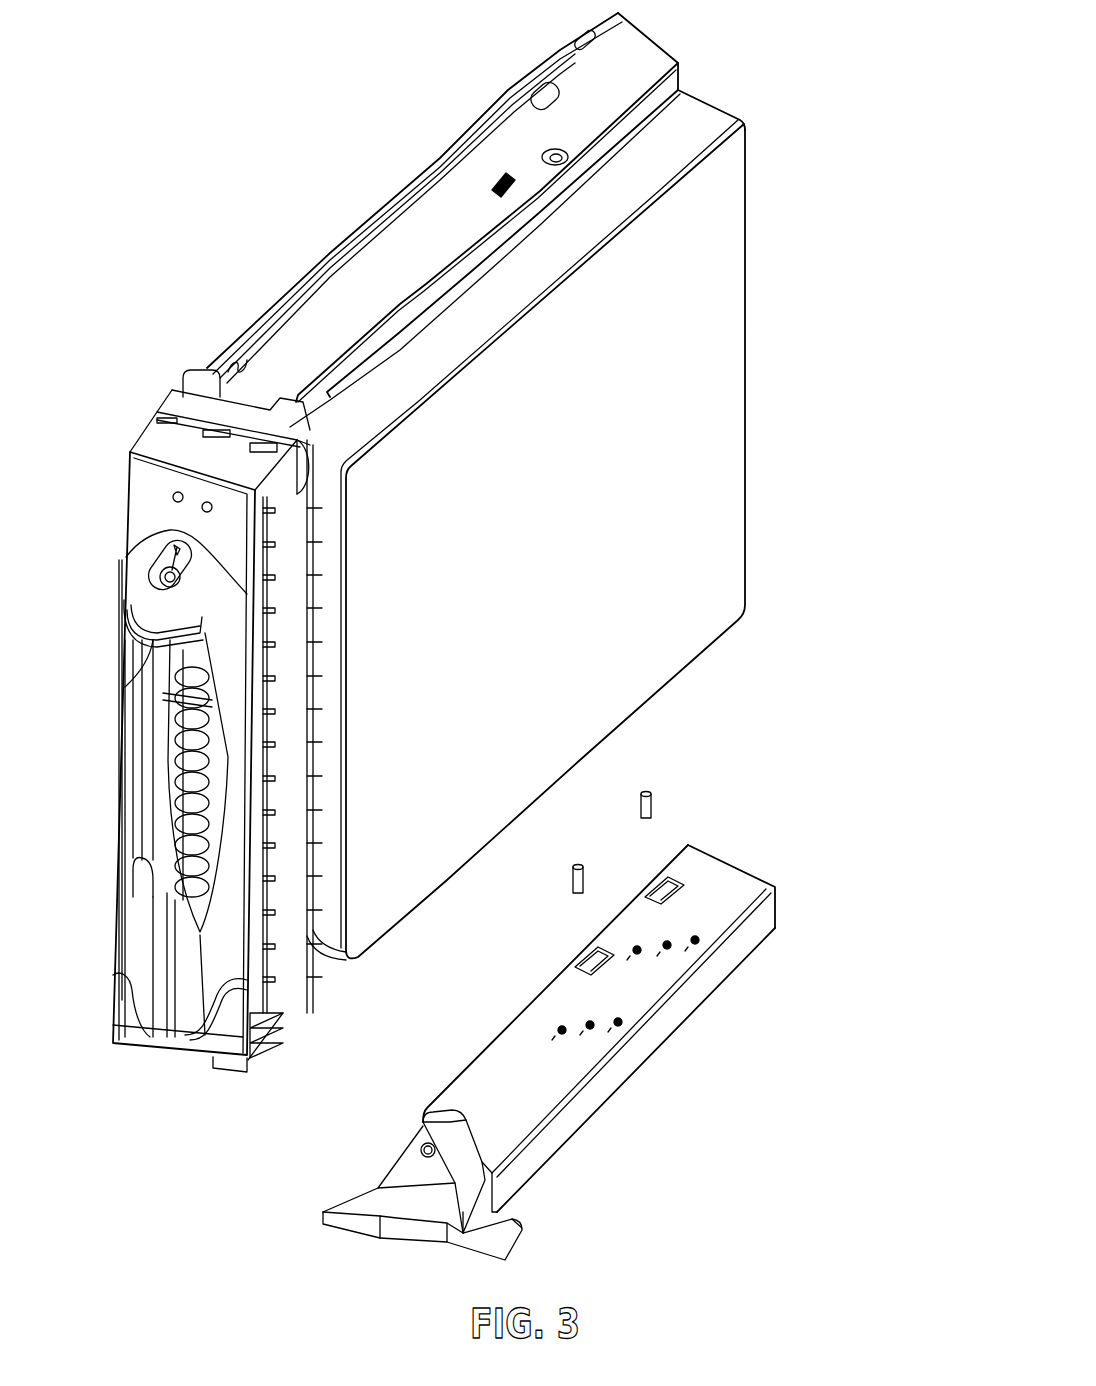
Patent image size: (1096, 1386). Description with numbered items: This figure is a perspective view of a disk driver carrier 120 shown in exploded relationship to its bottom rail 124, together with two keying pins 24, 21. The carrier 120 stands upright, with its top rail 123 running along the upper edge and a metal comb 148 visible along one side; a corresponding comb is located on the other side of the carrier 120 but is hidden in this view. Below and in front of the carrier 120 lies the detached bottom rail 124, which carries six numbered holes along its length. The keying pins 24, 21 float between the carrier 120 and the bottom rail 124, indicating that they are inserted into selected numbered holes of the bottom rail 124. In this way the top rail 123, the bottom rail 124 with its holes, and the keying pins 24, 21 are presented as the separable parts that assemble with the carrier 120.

The disk driver carrier 120 is at (582, 550).
The top rail 123 is at (473, 181).
The bottom rail 124 is at (510, 1122).
The metal comb 148 is at (300, 992).
The keying pin 21 is at (648, 808).
The keying pin 24 is at (573, 885).